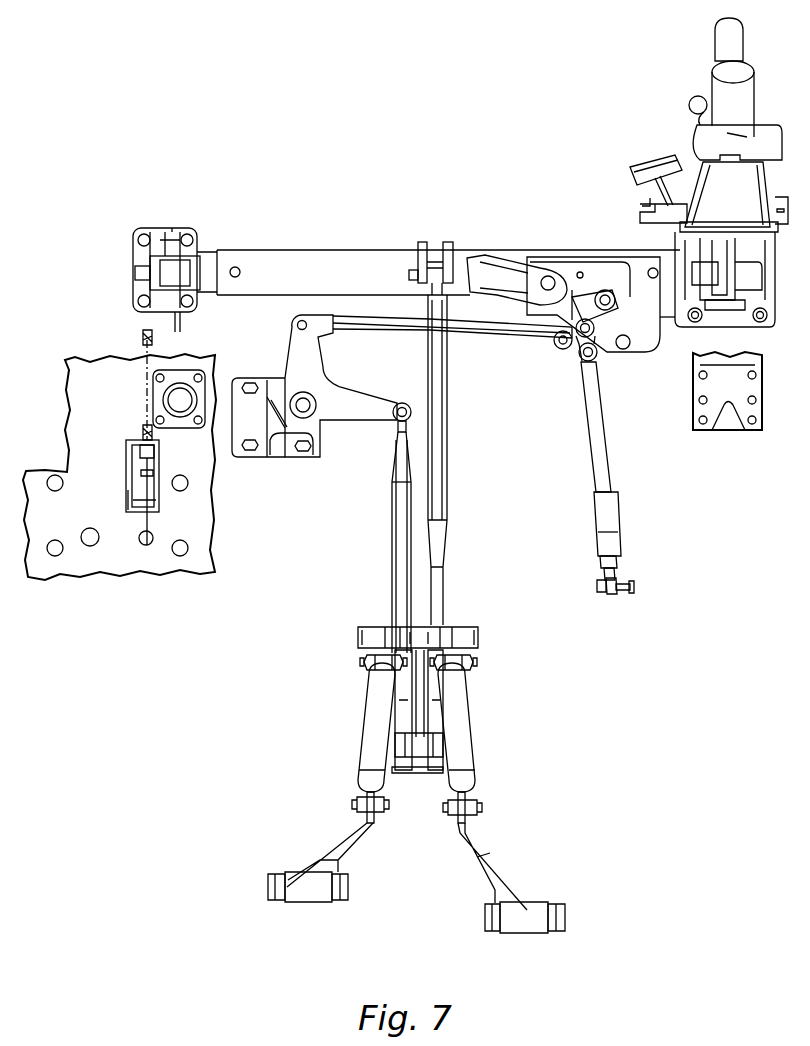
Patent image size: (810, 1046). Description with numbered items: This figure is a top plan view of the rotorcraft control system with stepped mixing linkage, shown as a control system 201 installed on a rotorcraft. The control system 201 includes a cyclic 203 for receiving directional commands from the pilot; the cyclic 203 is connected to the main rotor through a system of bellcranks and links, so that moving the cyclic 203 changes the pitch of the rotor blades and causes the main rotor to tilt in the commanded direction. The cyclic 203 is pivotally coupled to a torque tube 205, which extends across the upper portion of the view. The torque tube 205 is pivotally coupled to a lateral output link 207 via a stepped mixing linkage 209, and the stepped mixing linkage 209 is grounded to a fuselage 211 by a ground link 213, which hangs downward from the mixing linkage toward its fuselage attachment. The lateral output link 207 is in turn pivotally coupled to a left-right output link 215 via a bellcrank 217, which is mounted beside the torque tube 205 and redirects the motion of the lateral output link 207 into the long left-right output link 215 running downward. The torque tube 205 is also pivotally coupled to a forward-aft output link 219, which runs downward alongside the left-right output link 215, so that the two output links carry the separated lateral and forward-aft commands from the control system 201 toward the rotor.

The control system 201 is at (232, 160).
The cyclic 203 is at (712, 42).
The torque tube 205 is at (317, 250).
The lateral output link 207 is at (517, 336).
The stepped mixing linkage 209 is at (575, 368).
The fuselage 211 is at (630, 573).
The ground link 213 is at (612, 478).
The left-right output link 215 is at (392, 560).
The bellcrank 217 is at (332, 375).
The forward-aft output link 219 is at (448, 490).